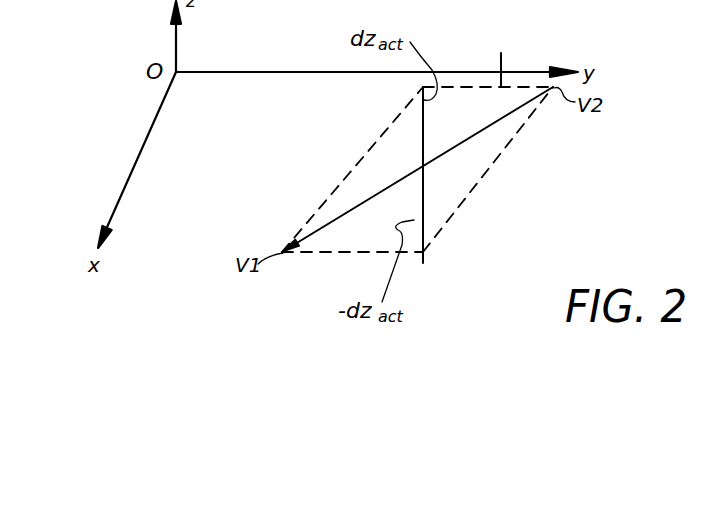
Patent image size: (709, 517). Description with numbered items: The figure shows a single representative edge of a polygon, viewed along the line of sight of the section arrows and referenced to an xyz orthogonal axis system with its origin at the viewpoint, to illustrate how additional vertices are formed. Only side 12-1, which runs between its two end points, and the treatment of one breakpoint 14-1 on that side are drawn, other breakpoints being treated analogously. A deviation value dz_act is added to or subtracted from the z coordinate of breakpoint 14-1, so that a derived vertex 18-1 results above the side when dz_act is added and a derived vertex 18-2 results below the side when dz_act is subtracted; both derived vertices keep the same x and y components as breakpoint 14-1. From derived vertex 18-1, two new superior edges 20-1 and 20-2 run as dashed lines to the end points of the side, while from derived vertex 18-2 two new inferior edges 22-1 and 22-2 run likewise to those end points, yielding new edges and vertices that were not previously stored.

The side 12-1 is at (503, 126).
The breakpoint 14-1 is at (426, 166).
The derived vertex 18-1 is at (418, 90).
The derived vertex 18-2 is at (423, 263).
The superior edge 20-1 is at (348, 174).
The superior edge 20-2 is at (514, 57).
The inferior edge 22-1 is at (328, 254).
The inferior edge 22-2 is at (464, 206).